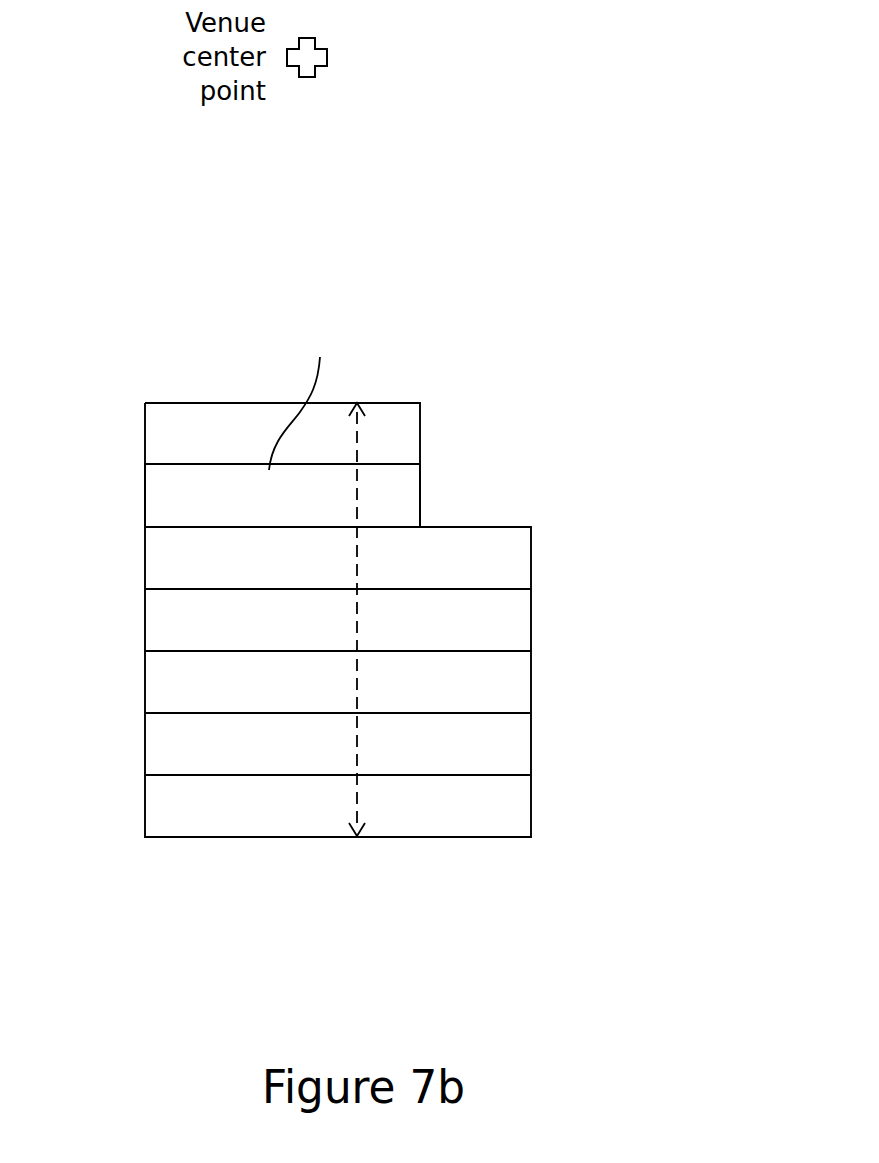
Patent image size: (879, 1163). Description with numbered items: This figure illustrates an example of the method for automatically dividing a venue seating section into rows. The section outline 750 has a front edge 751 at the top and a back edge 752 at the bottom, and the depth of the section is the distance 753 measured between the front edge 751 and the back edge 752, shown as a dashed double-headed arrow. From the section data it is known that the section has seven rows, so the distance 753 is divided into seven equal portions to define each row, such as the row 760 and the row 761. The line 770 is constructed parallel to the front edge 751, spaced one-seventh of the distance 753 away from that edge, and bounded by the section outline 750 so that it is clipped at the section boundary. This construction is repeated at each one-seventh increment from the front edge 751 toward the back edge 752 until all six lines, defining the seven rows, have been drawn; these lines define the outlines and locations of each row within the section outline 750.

The section outline 750 is at (532, 553).
The front edge 751 is at (405, 402).
The back edge 752 is at (492, 838).
The distance 753 is at (362, 678).
The row 760 is at (168, 440).
The row 761 is at (168, 497).
The line 770 is at (310, 396).